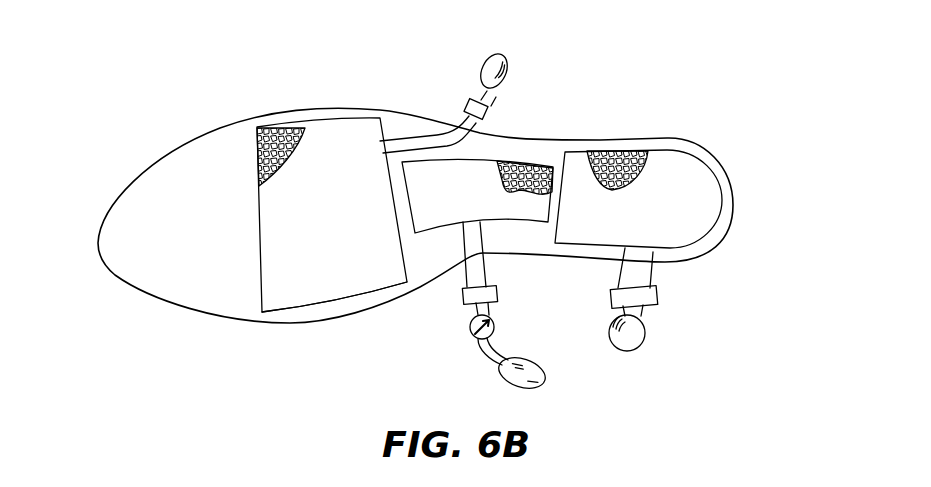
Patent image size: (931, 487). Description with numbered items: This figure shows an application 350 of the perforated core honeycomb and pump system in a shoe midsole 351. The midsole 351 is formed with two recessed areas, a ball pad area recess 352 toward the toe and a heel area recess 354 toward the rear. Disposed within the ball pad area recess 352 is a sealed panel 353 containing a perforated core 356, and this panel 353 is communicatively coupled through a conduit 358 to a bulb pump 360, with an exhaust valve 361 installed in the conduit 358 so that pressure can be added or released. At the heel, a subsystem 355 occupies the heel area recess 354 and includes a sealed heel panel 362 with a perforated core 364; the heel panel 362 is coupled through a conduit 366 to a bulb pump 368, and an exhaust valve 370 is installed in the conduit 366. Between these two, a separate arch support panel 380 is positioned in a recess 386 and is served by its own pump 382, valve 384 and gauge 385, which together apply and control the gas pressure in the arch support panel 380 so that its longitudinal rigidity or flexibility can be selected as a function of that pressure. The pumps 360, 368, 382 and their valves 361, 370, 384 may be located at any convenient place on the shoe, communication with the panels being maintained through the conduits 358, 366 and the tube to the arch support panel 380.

The application 350 is at (103, 300).
The midsole 351 is at (211, 347).
The ball pad area recess 352 is at (318, 306).
The panel 353 is at (268, 235).
The heel area recess 354 is at (603, 253).
The subsystem 355 is at (742, 198).
The perforated core 356 is at (283, 128).
The conduit 358 is at (440, 127).
The bulb pump 360 is at (505, 48).
The exhaust valve 361 is at (497, 107).
The heel panel 362 is at (683, 177).
The perforated core 364 is at (628, 152).
The conduit 366 is at (648, 272).
The bulb pump 368 is at (633, 340).
The exhaust valve 370 is at (640, 300).
The arch support panel 380 is at (480, 160).
The pump 382 is at (540, 382).
The valve 384 is at (463, 298).
The gauge 385 is at (477, 340).
The recess 386 is at (508, 222).